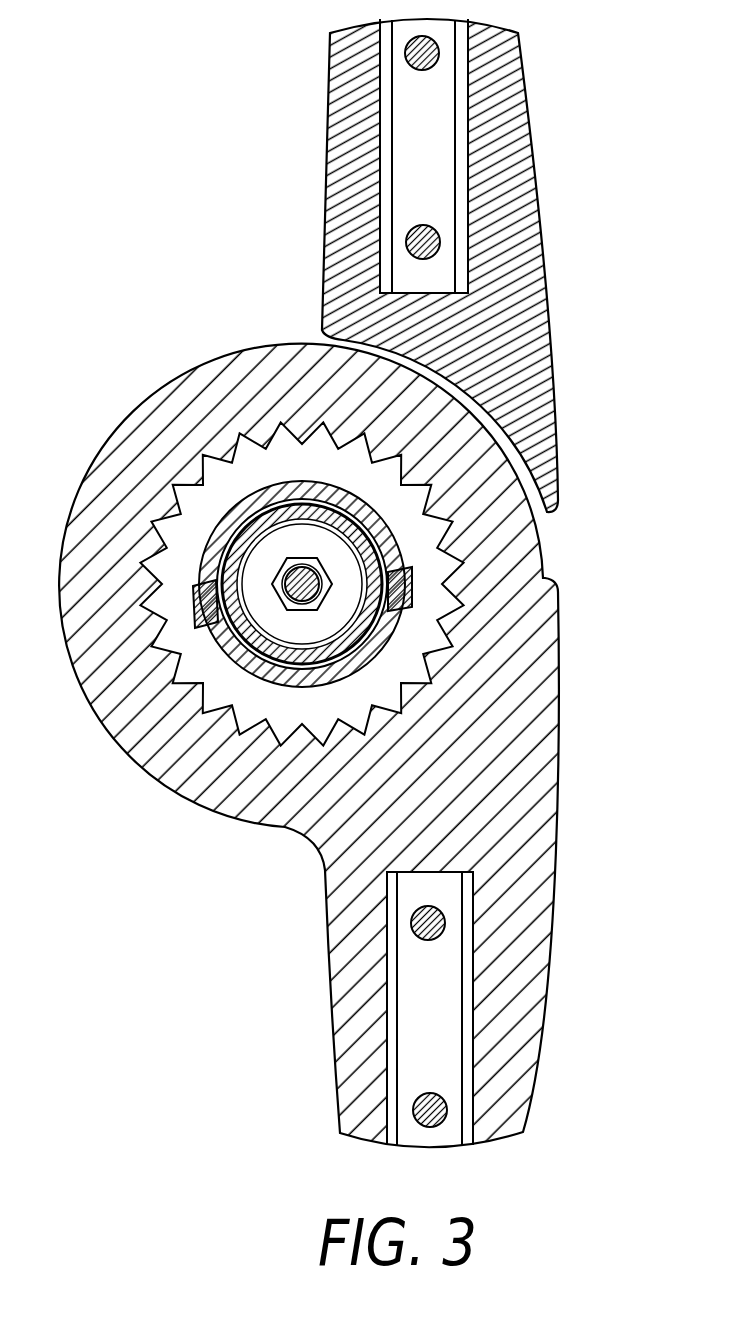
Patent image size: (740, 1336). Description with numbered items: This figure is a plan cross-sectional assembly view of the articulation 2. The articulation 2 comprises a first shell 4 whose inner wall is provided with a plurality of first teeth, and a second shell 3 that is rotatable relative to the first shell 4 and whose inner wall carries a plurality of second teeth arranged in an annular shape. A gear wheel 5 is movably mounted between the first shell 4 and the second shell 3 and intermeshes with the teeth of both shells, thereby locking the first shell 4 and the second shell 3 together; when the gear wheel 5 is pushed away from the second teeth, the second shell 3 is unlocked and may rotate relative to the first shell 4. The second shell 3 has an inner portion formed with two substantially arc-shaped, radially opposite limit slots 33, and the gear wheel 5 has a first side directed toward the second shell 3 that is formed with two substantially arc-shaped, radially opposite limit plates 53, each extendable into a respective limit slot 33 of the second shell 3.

The articulation 2 is at (373, 581).
The second shell 3 is at (487, 783).
The first shell 4 is at (507, 205).
The gear wheel 5 is at (412, 666).
The limit slot 33 is at (382, 532).
The limit plate 53 is at (414, 590).